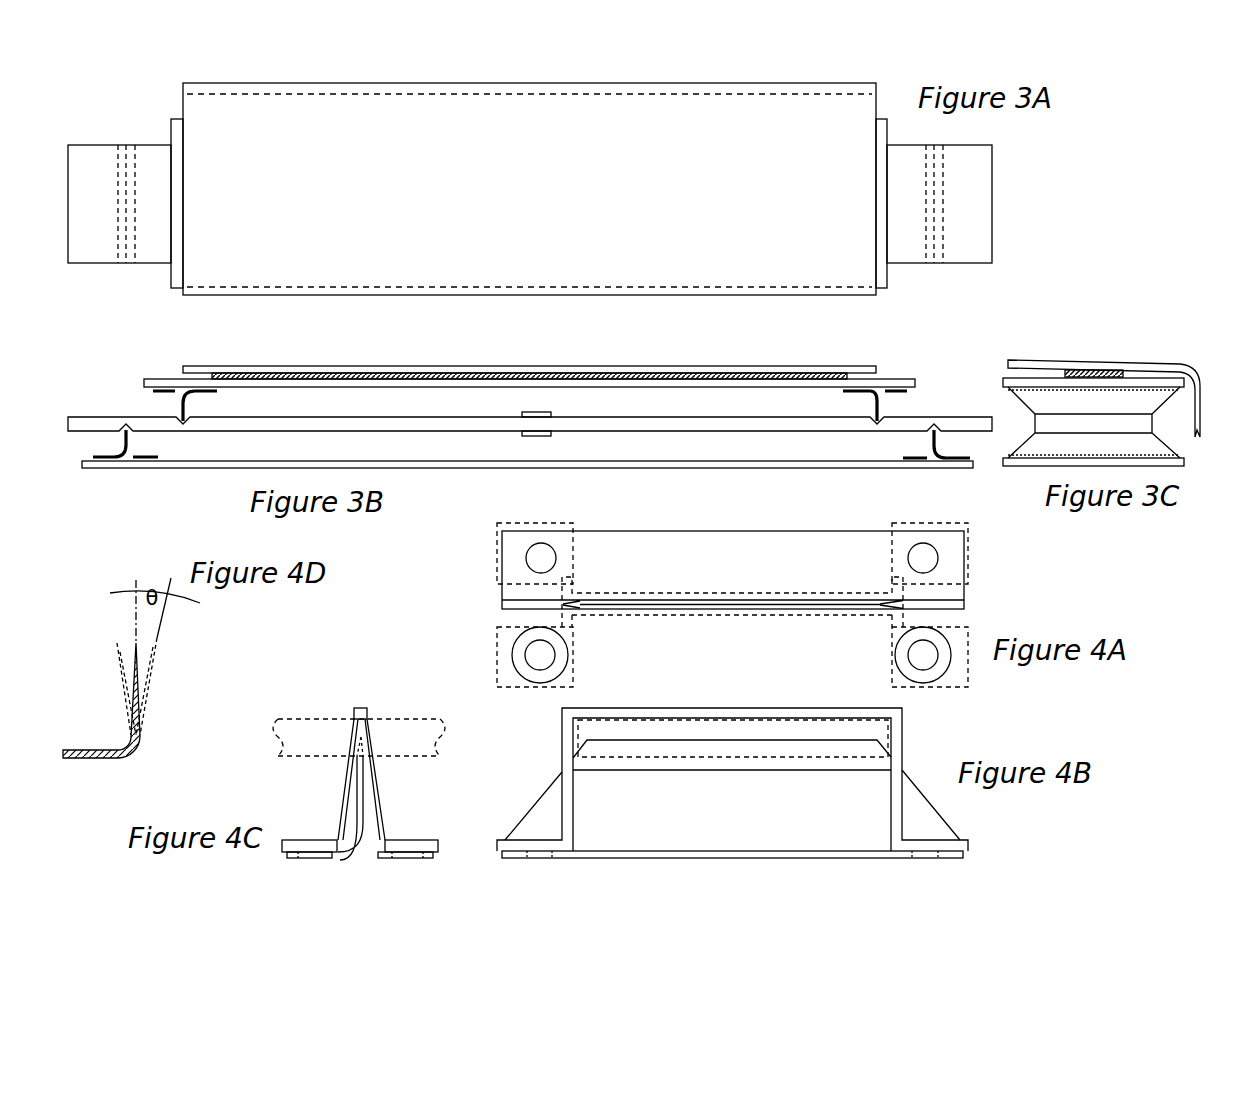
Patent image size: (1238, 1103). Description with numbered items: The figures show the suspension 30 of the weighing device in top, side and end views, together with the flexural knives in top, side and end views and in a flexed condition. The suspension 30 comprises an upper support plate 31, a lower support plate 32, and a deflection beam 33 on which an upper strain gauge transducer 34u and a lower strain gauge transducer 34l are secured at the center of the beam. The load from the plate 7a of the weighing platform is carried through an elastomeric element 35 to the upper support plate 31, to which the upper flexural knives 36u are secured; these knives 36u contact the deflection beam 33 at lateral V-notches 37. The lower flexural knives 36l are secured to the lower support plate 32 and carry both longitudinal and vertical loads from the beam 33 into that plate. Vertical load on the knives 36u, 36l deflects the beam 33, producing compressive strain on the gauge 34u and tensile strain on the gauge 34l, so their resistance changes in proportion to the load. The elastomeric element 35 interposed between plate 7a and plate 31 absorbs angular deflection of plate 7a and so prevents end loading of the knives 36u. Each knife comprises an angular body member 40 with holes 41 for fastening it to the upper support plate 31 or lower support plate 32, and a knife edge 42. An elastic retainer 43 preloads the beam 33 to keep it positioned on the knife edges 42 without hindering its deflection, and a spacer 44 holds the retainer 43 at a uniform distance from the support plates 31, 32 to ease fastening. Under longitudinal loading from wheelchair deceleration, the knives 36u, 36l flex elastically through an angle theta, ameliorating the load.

In FIG. 3A, the suspension 30 is at (789, 71).
In FIG. 3A, the upper support plate 31 is at (178, 132).
In FIG. 3B, the upper support plate 31 is at (176, 386).
In FIG. 3B, the lower support plate 32 is at (142, 468).
In FIG. 3A, the deflection beam 33 is at (97, 152).
In FIG. 3B, the deflection beam 33 is at (93, 416).
In FIG. 4B, the deflection beam 33 is at (878, 729).
In FIG. 4C, the deflection beam 33 is at (328, 718).
In FIG. 3B, the upper strain gauge transducer 34u is at (552, 402).
In FIG. 3B, the lower strain gauge transducer 34l is at (522, 445).
In FIG. 4D, the lower strain gauge transducer 34l is at (138, 743).
In FIG. 3B, the elastomeric element 35 is at (815, 372).
In FIG. 3C, the elastomeric element 35 is at (1096, 368).
In FIG. 3B, the upper flexural knives 36u is at (178, 403).
In FIG. 3C, the upper flexural knives 36u is at (1025, 395).
In FIG. 3B, the lower flexural knives 36l is at (132, 444).
In FIG. 3A, the lateral V-notches 37 is at (947, 229).
In FIG. 3B, the lateral V-notches 37 is at (932, 420).
In FIG. 3A, the platform support plate 7a is at (287, 103).
In FIG. 3B, the platform support plate 7a is at (291, 368).
In FIG. 3C, the platform support plate 7a is at (1177, 363).
In FIG. 4A, the angular body member 40 is at (666, 560).
In FIG. 4B, the angular body member 40 is at (938, 824).
In FIG. 4C, the angular body member 40 is at (358, 822).
In FIG. 4A, the holes 41 is at (940, 560).
In FIG. 4B, the knife edge 42 is at (813, 750).
In FIG. 4A, the elastic retainer 43 is at (498, 655).
In FIG. 4B, the elastic retainer 43 is at (562, 737).
In FIG. 4C, the elastic retainer 43 is at (378, 790).
In FIG. 4A, the spacer 44 is at (570, 655).
In FIG. 4C, the spacer 44 is at (430, 853).